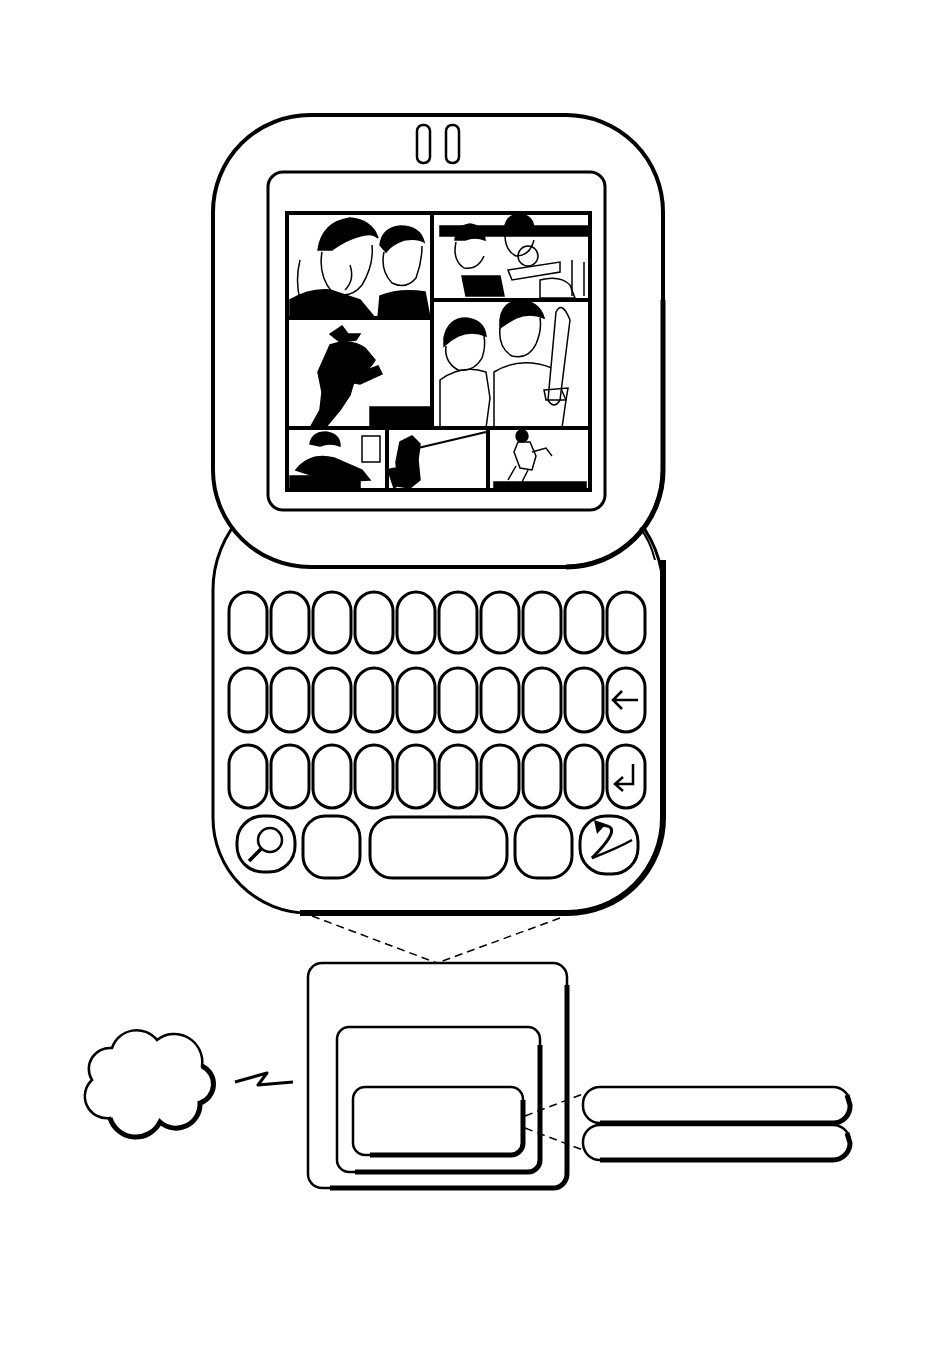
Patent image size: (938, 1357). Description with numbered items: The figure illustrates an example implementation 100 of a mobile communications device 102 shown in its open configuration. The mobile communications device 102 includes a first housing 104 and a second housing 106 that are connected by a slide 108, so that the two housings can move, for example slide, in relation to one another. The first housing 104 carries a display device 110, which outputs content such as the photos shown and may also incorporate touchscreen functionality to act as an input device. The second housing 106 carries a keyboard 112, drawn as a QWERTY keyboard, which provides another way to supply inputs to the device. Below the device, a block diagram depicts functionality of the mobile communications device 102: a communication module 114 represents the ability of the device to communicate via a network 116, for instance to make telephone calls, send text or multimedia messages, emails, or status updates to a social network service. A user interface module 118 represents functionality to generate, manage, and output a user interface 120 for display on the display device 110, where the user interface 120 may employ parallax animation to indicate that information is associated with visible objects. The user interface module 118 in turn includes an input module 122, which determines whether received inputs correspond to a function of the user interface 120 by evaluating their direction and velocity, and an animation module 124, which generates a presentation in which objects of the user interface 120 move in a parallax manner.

The example implementation 100 is at (143, 70).
The mobile communications device 102 is at (493, 1021).
The first housing 104 is at (228, 166).
The second housing 106 is at (218, 568).
The slide 108 is at (655, 520).
The display device 110 is at (263, 334).
The keyboard 112 is at (678, 568).
The communication module 114 is at (493, 1080).
The network 116 is at (172, 1095).
The user interface module 118 is at (493, 1143).
The user interface 120 is at (584, 204).
The input module 122 is at (800, 1115).
The animation module 124 is at (824, 1151).